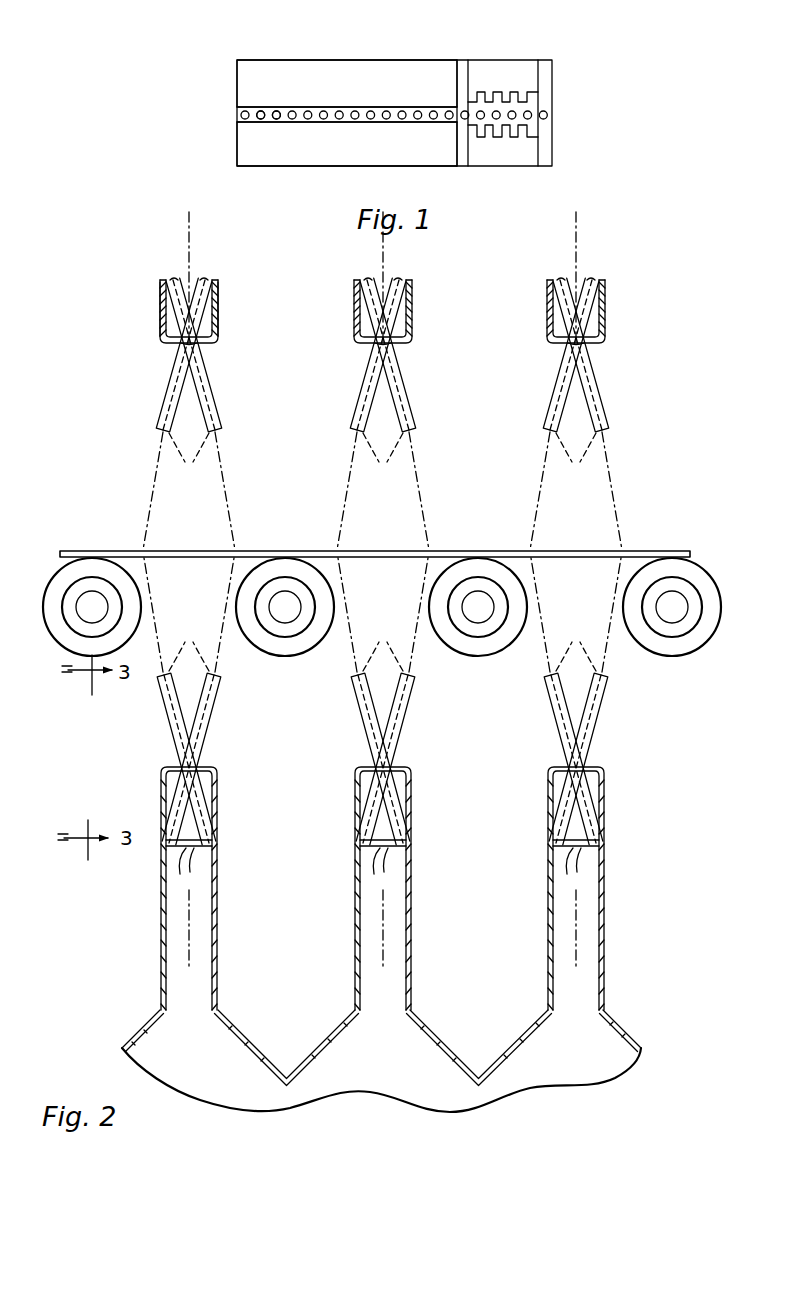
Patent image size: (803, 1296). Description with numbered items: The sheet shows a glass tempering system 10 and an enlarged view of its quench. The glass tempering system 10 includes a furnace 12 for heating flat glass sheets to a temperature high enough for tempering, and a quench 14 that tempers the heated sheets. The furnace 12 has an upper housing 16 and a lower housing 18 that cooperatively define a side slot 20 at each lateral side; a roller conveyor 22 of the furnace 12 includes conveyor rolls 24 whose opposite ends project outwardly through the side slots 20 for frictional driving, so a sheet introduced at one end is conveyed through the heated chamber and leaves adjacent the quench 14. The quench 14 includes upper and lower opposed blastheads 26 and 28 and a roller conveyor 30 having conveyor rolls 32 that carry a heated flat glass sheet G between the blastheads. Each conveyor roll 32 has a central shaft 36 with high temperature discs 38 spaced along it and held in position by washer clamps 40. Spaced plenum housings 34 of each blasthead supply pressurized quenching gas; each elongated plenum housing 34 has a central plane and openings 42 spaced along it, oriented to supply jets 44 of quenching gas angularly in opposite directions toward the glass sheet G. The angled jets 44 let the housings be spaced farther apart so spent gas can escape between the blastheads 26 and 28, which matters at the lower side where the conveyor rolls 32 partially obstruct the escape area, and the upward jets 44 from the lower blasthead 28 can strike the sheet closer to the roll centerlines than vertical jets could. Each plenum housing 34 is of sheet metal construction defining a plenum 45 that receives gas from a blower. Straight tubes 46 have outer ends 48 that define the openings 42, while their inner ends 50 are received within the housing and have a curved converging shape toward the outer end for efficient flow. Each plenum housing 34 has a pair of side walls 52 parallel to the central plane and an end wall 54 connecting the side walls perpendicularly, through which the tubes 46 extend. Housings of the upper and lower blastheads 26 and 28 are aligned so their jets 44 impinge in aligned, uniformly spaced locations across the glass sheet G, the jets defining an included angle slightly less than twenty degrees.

In FIG. 1, the glass tempering system 10 is at (437, 42).
In FIG. 1, the furnace 12 is at (356, 58).
In FIG. 1, the quench 14 is at (531, 89).
In FIG. 2, the quench 14 is at (598, 378).
In FIG. 1, the upper housing 16 is at (330, 62).
In FIG. 1, the lower housing 18 is at (310, 156).
In FIG. 1, the side slot 20 is at (352, 112).
In FIG. 1, the roller conveyor 22 is at (236, 116).
In FIG. 1, the conveyor rolls 24 is at (272, 113).
In FIG. 1, the upper blasthead 26 is at (545, 84).
In FIG. 2, the upper blasthead 26 is at (598, 378).
In FIG. 1, the lower blasthead 28 is at (545, 139).
In FIG. 2, the lower blasthead 28 is at (646, 1040).
In FIG. 1, the roller conveyor 30 is at (548, 114).
In FIG. 2, the roller conveyor 30 is at (379, 599).
In FIG. 2, the conveyor rolls 32 is at (70, 616).
In FIG. 2, the plenum housing 34 is at (157, 311).
In FIG. 2, the central shaft 36 is at (76, 606).
In FIG. 2, the high temperature discs 38 is at (56, 582).
In FIG. 2, the washer clamps 40 is at (68, 620).
In FIG. 2, the openings 42 is at (189, 455).
In FIG. 2, the jets of quenching gas 44 is at (189, 491).
In FIG. 2, the plenum 45 is at (159, 274).
In FIG. 2, the straight tubes 46 is at (208, 355).
In FIG. 2, the outer ends 48 is at (217, 355).
In FIG. 2, the inner ends 50 is at (189, 865).
In FIG. 2, the side walls 52 is at (225, 299).
In FIG. 2, the end wall 54 is at (156, 354).
In FIG. 2, the glass sheet G is at (85, 550).